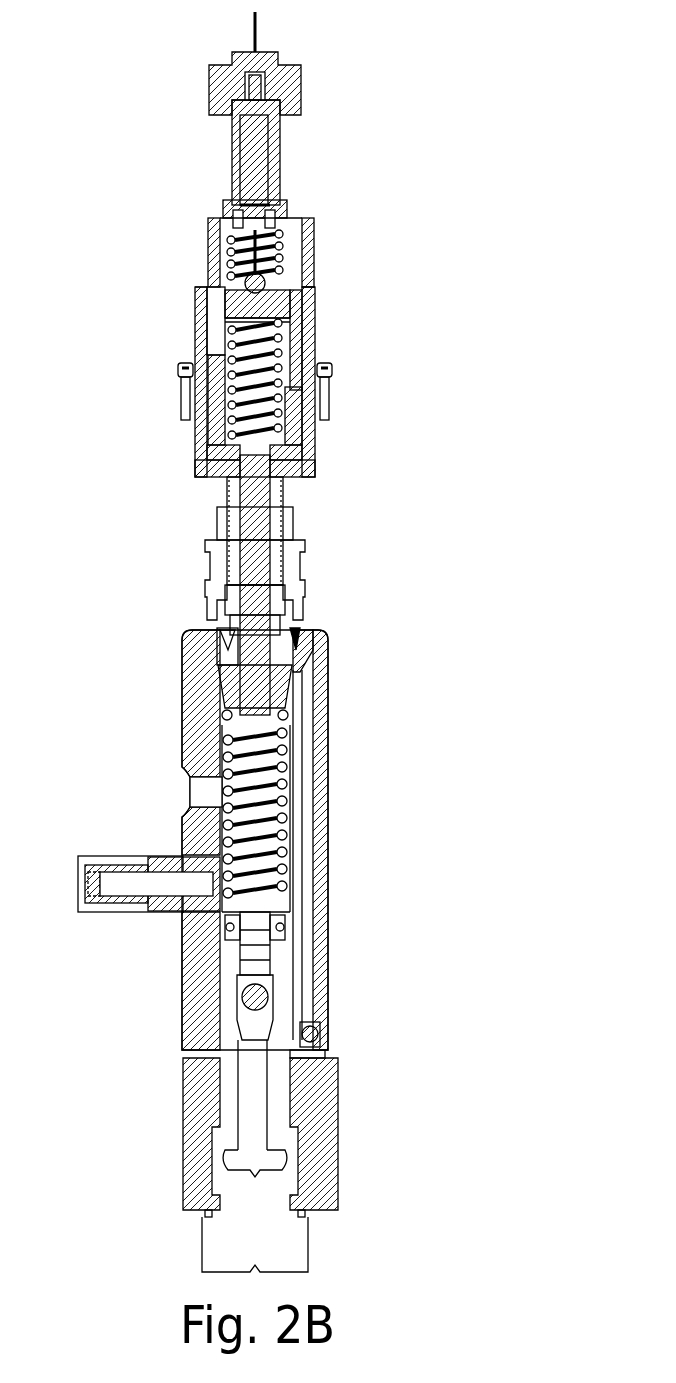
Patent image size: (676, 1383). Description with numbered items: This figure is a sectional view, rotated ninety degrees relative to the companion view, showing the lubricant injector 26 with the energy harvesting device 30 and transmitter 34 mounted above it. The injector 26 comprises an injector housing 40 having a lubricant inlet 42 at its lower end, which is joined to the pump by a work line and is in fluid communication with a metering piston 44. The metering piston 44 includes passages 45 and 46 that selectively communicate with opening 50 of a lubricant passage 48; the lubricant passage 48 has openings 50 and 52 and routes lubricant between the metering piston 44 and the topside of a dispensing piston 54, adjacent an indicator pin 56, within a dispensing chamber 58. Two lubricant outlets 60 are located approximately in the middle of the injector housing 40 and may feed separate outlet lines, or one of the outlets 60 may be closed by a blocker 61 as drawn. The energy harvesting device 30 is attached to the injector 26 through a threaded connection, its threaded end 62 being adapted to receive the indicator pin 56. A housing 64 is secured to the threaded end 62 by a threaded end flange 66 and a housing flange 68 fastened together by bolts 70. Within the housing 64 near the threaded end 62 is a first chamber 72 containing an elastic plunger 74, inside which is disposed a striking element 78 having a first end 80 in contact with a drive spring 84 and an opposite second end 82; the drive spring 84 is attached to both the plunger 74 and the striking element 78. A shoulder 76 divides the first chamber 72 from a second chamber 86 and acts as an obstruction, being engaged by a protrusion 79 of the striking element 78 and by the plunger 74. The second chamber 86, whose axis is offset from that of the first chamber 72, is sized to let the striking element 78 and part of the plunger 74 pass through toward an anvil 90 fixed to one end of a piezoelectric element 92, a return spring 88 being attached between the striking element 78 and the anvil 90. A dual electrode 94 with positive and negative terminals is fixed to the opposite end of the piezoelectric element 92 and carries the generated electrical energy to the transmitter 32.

The injector 26 is at (264, 923).
The energy harvesting device 30 is at (273, 247).
The transmitter 32 is at (282, 62).
The transmitter 34 is at (252, 27).
The injector housing 40 is at (312, 647).
The lubricant inlet 42 is at (277, 1155).
The metering piston 44 is at (278, 997).
The metering piston passage 45 is at (277, 970).
The metering piston passage 46 is at (240, 1020).
The lubricant passage 48 is at (308, 825).
The fluid passage opening 50 is at (298, 925).
The fluid passage opening 52 is at (300, 668).
The dispensing piston 54 is at (220, 697).
The indicator pin 56 is at (208, 643).
The dispensing chamber 58 is at (228, 855).
The lubricant outlets 60 is at (205, 790).
The blocker 61 is at (93, 908).
The energy harvesting device threaded end 62 is at (283, 492).
The housing 64 is at (265, 347).
The threaded end flange 66 is at (197, 405).
The housing flange 68 is at (190, 403).
The bolts 70 is at (332, 363).
The first chamber 72 is at (225, 355).
The plunger 74 is at (303, 312).
The shoulder 76 is at (225, 305).
The striking element 78 is at (298, 262).
The striking element protrusion 79 is at (232, 318).
The striking element first end 80 is at (217, 340).
The striking element second end 82 is at (240, 287).
The drive spring 84 is at (298, 425).
The second chamber 86 is at (223, 255).
The return spring 88 is at (285, 237).
The anvil 90 is at (250, 207).
The piezoelectric element 92 is at (240, 148).
The dual electrode 94 is at (277, 107).